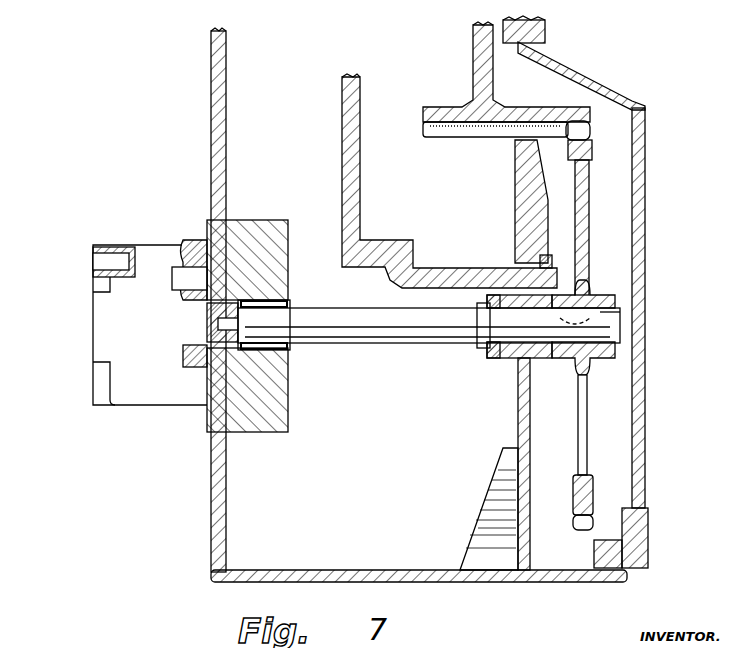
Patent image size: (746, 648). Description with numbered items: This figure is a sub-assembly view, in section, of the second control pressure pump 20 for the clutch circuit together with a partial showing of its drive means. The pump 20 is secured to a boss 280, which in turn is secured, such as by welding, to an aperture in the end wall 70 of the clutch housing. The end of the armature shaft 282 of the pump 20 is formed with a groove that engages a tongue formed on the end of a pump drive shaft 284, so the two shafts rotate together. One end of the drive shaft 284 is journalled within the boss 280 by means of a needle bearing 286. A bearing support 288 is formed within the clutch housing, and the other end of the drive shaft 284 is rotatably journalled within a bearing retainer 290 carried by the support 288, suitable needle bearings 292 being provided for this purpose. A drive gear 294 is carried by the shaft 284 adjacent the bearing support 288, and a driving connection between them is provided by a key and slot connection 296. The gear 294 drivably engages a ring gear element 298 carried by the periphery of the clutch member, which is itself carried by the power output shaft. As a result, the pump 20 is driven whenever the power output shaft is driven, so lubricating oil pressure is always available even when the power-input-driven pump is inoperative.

The pump 20 is at (97, 308).
The wall 70 is at (225, 480).
The boss 280 is at (265, 405).
The armature shaft 282 is at (202, 328).
The pump drive shaft 284 is at (284, 310).
The needle bearing 286 is at (283, 368).
The bearing support 288 is at (517, 432).
The bearing retainer 290 is at (527, 360).
The needle bearings 292 is at (503, 360).
The drive gear 294 is at (583, 420).
The key and slot connection 296 is at (600, 318).
The ring gear element 298 is at (582, 130).